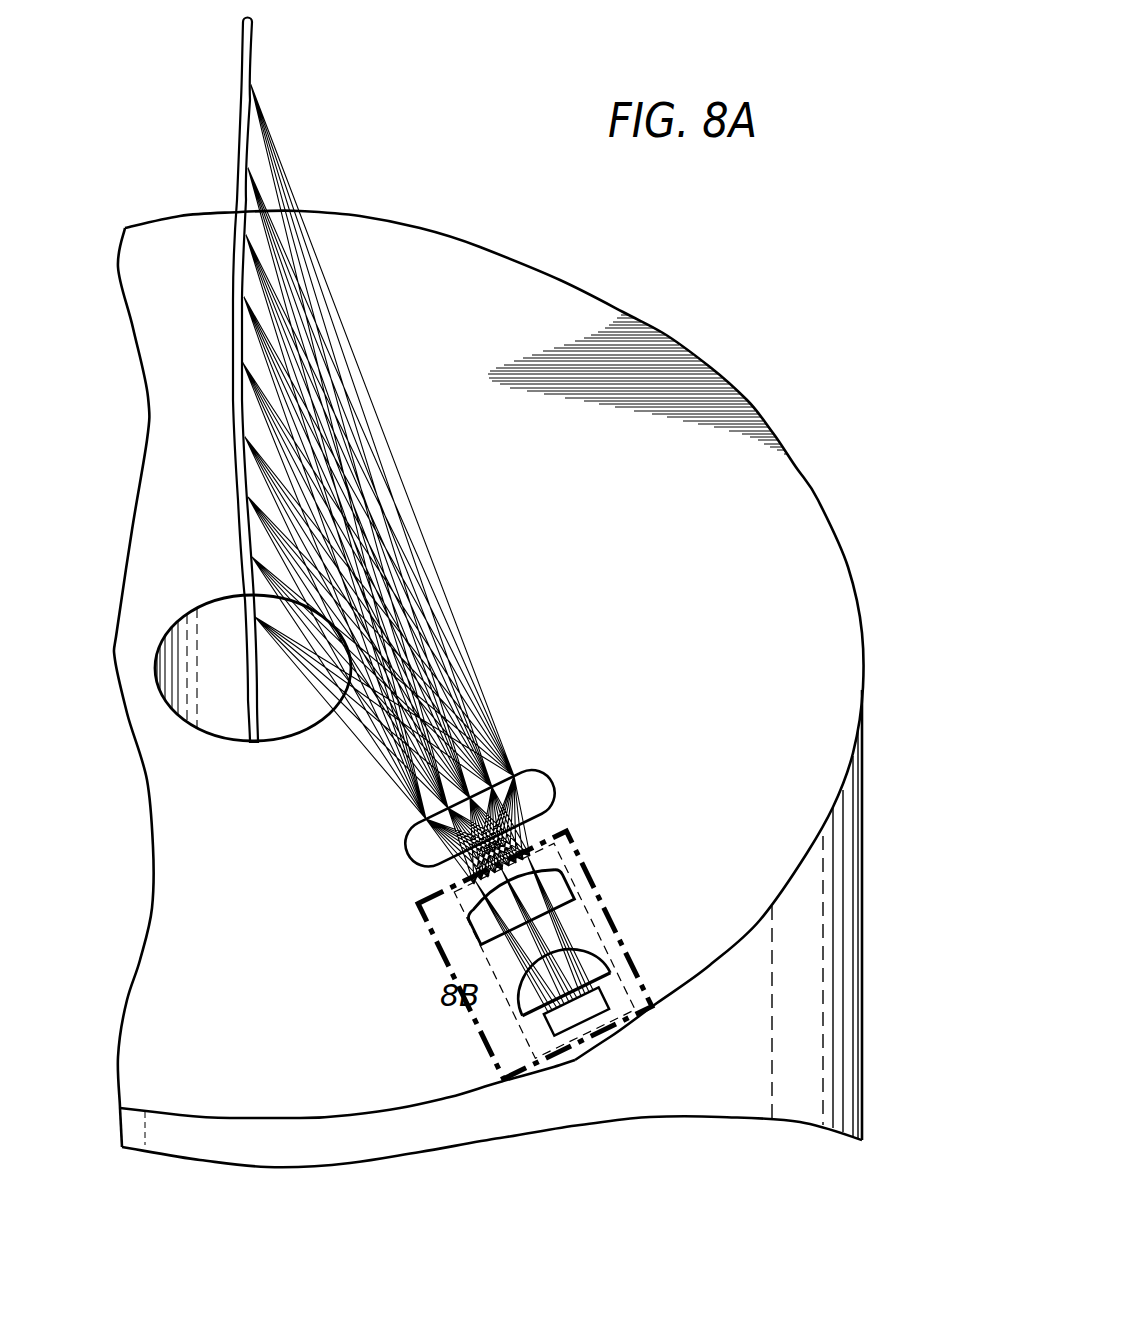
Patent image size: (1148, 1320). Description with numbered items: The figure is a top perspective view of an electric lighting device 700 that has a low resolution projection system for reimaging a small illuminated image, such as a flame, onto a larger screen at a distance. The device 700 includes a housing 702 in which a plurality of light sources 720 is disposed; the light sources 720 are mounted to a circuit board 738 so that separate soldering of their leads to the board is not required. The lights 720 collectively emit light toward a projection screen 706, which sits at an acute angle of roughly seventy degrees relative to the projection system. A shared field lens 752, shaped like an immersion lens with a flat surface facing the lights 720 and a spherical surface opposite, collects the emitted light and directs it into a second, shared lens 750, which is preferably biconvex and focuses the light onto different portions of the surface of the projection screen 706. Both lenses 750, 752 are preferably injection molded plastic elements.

The electric lighting device 700 is at (690, 292).
The housing 702 is at (775, 436).
The projection screen 706 is at (253, 50).
The light sources 720 is at (533, 1018).
The circuit board 738 is at (587, 1032).
The second shared lens 750 is at (576, 884).
The shared field lens 752 is at (596, 962).